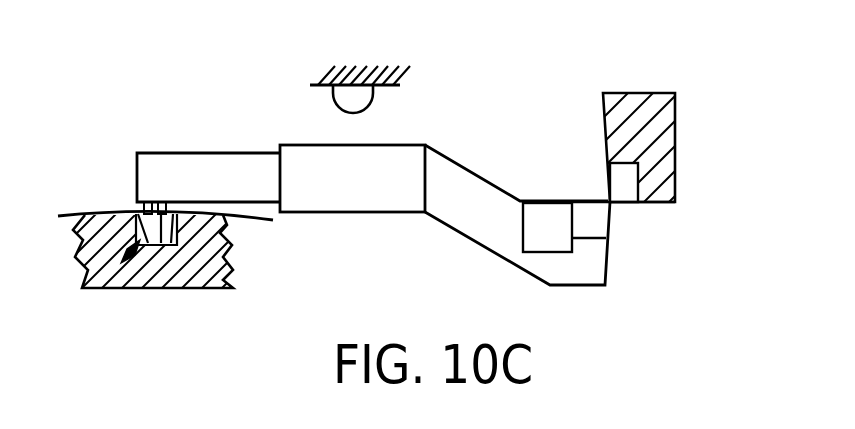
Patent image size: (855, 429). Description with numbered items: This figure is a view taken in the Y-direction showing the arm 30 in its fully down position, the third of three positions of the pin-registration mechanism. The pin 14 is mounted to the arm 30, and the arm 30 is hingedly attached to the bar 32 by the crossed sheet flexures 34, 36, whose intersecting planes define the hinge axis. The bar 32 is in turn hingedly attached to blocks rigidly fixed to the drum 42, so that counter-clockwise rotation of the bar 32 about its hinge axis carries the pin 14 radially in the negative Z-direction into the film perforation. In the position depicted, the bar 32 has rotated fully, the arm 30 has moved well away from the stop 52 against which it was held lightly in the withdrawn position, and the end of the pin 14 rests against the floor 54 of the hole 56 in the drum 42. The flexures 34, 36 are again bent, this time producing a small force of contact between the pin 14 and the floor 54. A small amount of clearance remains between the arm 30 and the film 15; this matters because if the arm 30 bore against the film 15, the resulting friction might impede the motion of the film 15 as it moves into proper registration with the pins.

The pin 14 is at (134, 213).
The film 15 is at (93, 212).
The arm 30 is at (360, 212).
The bar 32 is at (660, 100).
The sheet flexure 34 is at (625, 207).
The sheet flexure 36 is at (608, 187).
The drum 42 is at (202, 282).
The stop 52 is at (367, 103).
The floor 54 is at (182, 232).
The hole 56 is at (113, 286).